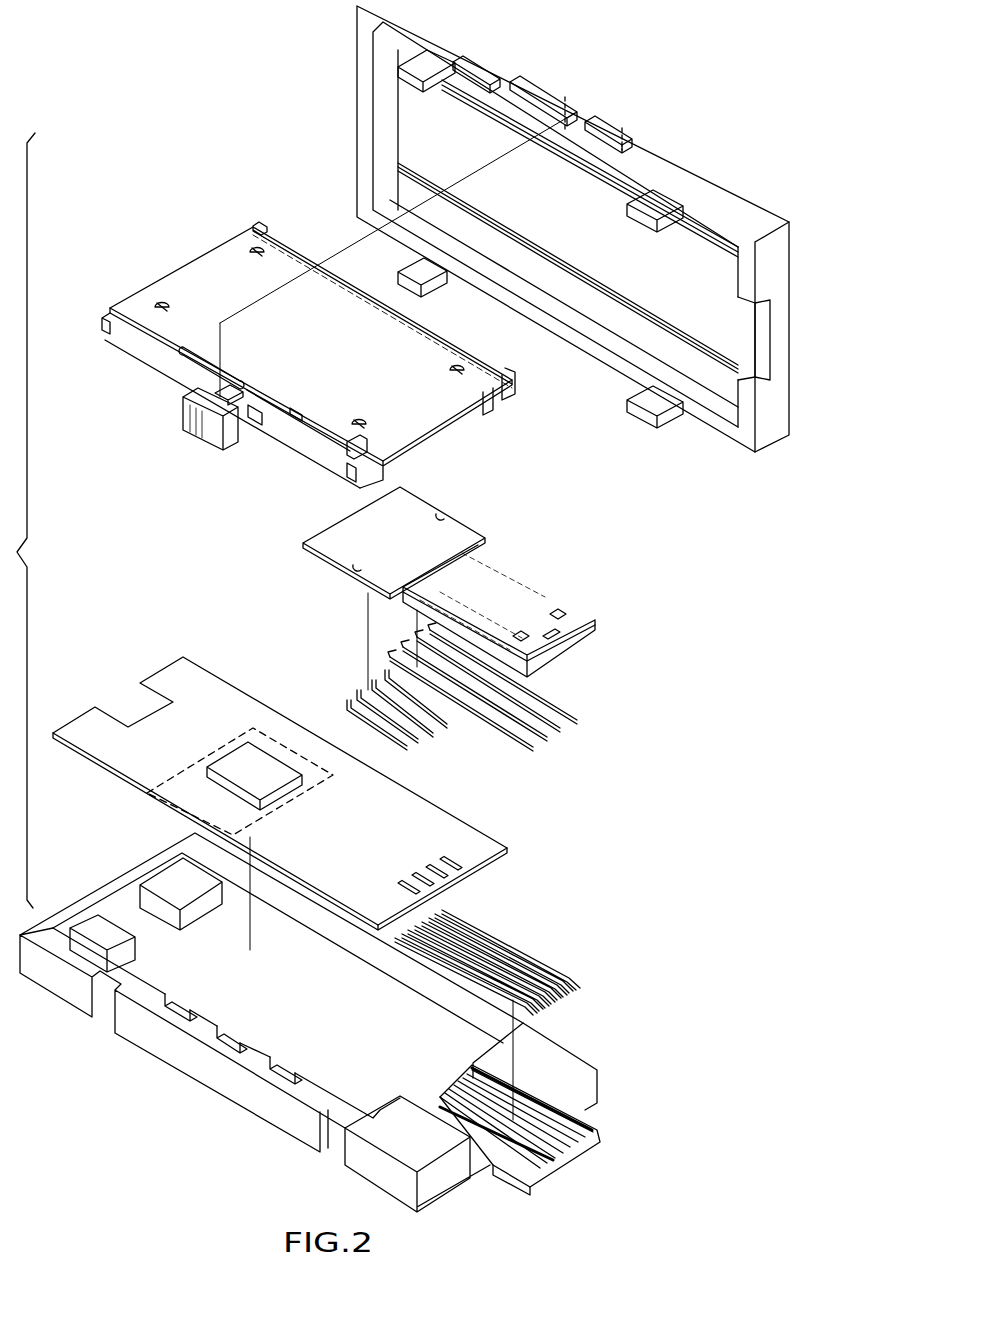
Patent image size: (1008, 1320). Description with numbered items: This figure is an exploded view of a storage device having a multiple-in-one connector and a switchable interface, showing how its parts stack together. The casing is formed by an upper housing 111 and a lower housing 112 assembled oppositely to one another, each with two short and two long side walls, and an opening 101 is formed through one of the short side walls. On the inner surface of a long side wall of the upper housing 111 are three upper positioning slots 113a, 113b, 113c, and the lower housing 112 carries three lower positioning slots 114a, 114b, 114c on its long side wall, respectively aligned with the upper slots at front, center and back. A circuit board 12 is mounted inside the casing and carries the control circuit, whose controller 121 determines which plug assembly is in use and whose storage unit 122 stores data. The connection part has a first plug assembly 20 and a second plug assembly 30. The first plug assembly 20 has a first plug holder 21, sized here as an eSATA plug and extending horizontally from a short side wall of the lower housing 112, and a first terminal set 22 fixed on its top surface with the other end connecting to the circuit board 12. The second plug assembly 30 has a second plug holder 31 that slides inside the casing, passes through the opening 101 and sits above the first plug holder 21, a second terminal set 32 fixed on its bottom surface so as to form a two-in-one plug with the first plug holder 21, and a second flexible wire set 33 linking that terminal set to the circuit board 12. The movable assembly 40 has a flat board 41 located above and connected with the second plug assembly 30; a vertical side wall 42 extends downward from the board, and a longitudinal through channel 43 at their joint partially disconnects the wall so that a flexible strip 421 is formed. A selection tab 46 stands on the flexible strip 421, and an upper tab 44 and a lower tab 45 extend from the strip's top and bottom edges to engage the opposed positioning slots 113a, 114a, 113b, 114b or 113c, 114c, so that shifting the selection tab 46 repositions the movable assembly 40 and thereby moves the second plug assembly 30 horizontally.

The opening 101 is at (755, 360).
The upper housing 111 is at (573, 229).
The lower housing 112 is at (349, 1022).
The upper positioning slot 113a is at (630, 160).
The upper positioning slot 113b is at (582, 129).
The upper positioning slot 113c is at (525, 100).
The lower positioning slot 114a is at (290, 1082).
The lower positioning slot 114b is at (240, 1047).
The lower positioning slot 114c is at (180, 1007).
The circuit board 12 is at (280, 793).
The controller 121 is at (242, 752).
The storage unit 122 is at (177, 787).
The first plug assembly 20 is at (528, 1004).
The first plug holder 21 is at (560, 1168).
The first terminal set 22 is at (543, 952).
The second plug assembly 30 is at (494, 619).
The second plug holder 31 is at (505, 578).
The second terminal set 32 is at (574, 700).
The second flexible wire set 33 is at (358, 683).
The movable assembly 40 is at (304, 330).
The flat board 41 is at (207, 272).
The vertical side wall 42 is at (304, 400).
The flexible strip 421 is at (257, 415).
The longitudinal through channel 43 is at (295, 412).
The upper tab 44 is at (233, 383).
The lower tab 45 is at (233, 415).
The selection tab 46 is at (213, 433).